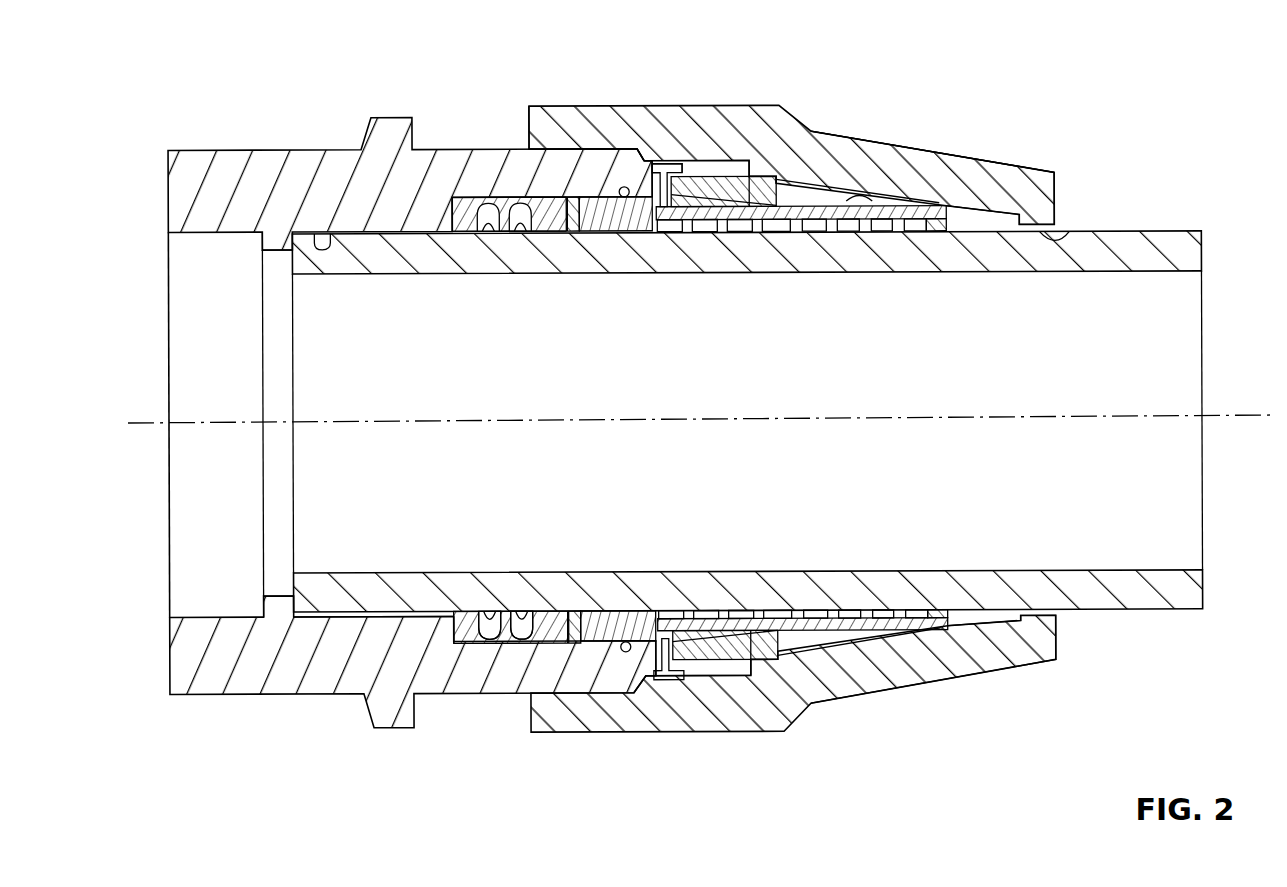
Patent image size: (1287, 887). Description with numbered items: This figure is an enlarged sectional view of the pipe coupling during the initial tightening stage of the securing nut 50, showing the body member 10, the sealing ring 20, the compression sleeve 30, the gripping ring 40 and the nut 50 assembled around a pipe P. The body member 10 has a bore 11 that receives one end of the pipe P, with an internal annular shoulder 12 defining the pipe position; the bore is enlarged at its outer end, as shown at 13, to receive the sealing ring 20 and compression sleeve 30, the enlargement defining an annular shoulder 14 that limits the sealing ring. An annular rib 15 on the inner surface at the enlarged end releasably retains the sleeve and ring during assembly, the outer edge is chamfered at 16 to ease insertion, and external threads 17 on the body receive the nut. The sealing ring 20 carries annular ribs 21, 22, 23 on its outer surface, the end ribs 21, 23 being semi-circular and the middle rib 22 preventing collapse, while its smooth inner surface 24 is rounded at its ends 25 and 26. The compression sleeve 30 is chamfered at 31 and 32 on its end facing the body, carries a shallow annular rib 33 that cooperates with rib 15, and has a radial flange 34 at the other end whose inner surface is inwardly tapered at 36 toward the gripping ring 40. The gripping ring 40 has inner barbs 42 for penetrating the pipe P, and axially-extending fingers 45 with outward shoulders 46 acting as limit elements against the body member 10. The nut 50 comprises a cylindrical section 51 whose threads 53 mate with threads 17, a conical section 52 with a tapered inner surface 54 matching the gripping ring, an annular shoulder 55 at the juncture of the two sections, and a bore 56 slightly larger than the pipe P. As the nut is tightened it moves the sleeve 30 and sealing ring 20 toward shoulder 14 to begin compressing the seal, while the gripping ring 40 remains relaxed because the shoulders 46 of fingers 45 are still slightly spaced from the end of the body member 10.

The body member 10 is at (285, 700).
The bore 11 is at (323, 235).
The internal annular shoulder 12 is at (265, 250).
The enlarged end of bore 13 is at (497, 205).
The annular shoulder 14 is at (470, 238).
The annular rib 15 is at (625, 205).
The chamfer 16 is at (664, 208).
The external threads 17 is at (550, 160).
The sealing ring 20 is at (510, 655).
The annular rib 21 is at (418, 614).
The middle rib 22 is at (526, 638).
The annular rib 23 is at (575, 622).
The inner surface 24 is at (491, 638).
The rounded end 25 is at (455, 628).
The rounded end 26 is at (655, 643).
The compression sleeve 30 is at (698, 648).
The inner chamfer 31 is at (575, 235).
The outer chamfer 32 is at (530, 200).
The shallow annular rib 33 is at (582, 200).
The radial flange 34 is at (752, 668).
The tapered inner surface 36 is at (762, 640).
The gripping ring 40 is at (802, 474).
The annular barbs 42 is at (862, 234).
The fingers 45 is at (722, 180).
The shoulder 46 is at (665, 172).
The securing nut 50 is at (1030, 668).
The cylindrical section 51 is at (750, 170).
The conical section 52 is at (975, 178).
The threads 53 is at (612, 185).
The tapered surface 54 is at (888, 200).
The annular shoulder 55 is at (795, 190).
The bore 56 is at (1062, 233).
The pipe P is at (1135, 598).